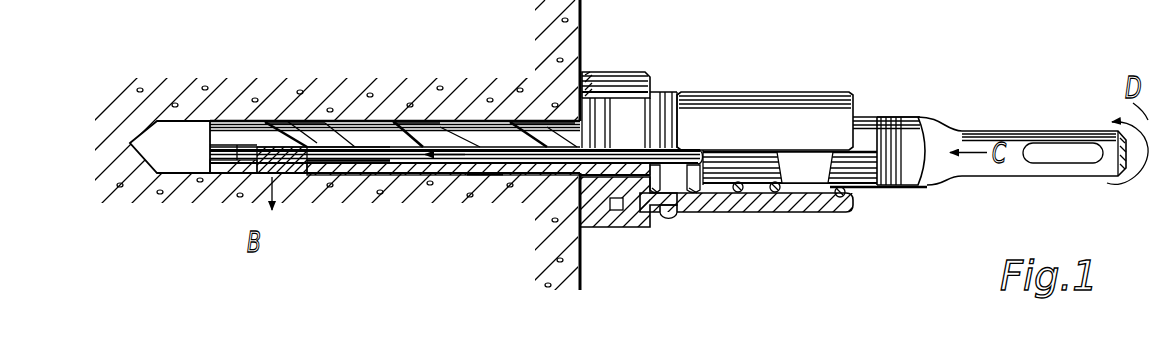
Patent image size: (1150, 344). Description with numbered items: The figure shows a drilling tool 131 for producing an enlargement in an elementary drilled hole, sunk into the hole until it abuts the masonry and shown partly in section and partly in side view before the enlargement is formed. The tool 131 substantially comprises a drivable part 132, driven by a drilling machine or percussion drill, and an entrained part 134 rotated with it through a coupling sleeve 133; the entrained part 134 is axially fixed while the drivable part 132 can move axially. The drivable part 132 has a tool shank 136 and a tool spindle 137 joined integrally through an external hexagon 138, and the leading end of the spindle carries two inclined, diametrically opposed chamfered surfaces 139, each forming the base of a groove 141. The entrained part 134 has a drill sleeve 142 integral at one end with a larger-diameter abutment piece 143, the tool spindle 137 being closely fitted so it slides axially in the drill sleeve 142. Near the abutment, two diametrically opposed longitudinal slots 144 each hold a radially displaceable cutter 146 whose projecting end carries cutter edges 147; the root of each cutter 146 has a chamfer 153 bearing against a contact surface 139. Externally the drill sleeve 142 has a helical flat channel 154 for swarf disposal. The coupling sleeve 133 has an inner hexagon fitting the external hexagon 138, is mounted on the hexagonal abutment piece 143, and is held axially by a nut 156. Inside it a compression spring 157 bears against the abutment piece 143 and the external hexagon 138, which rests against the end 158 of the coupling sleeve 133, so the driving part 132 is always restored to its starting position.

The tool 131 is at (715, 82).
The drivable part 132 is at (1000, 120).
The coupling sleeve 133 is at (818, 212).
The entrained part 134 is at (437, 182).
The tool shank 136 is at (893, 117).
The tool spindle 137 is at (490, 147).
The external hexagon 138 is at (800, 203).
The chamfered surfaces 139 is at (320, 153).
The groove 141 is at (250, 150).
The drill sleeve 142 is at (515, 177).
The abutment piece 143 is at (610, 84).
The longitudinal slots 144 is at (303, 163).
The cutter 146 is at (295, 173).
The cutter edges 147 is at (265, 180).
The chamfer 153 is at (303, 147).
The helically extending flat wide channel 154 is at (423, 125).
The nut 156 is at (620, 228).
The compression spring 157 is at (703, 220).
The end of the coupling sleeve 158 is at (853, 196).